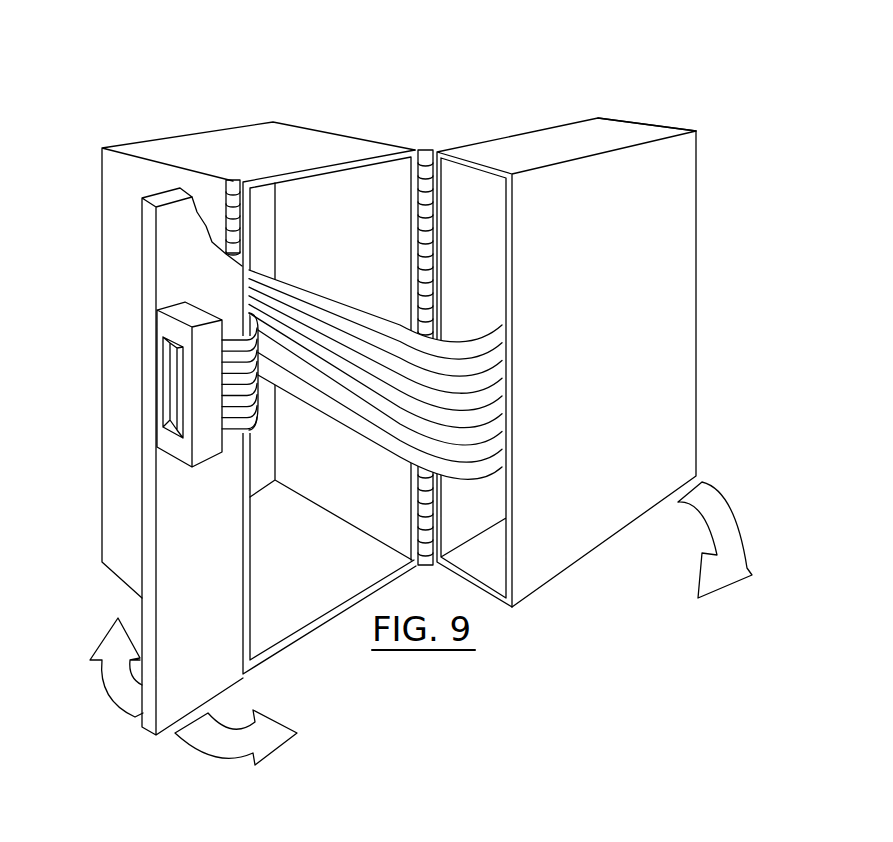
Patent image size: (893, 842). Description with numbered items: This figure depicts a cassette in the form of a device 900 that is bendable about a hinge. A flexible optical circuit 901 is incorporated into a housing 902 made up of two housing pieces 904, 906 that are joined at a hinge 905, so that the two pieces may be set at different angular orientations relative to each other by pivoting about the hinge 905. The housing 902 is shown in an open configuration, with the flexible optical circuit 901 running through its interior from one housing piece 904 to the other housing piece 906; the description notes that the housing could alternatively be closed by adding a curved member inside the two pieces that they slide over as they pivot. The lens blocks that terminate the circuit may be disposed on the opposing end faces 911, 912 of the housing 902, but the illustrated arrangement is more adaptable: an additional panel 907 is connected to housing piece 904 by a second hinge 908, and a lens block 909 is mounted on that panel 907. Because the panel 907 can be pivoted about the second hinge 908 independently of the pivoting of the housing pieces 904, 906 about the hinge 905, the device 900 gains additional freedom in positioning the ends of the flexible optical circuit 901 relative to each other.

The device 900 is at (541, 70).
The flexible optical circuit 901 is at (312, 318).
The housing 902 is at (677, 112).
The housing piece 904 is at (311, 140).
The hinge 905 is at (427, 150).
The housing piece 906 is at (678, 281).
The panel 907 is at (205, 562).
The second hinge 908 is at (233, 180).
The lens block 909 is at (183, 303).
The end face 911 is at (709, 202).
The end face 912 is at (94, 143).